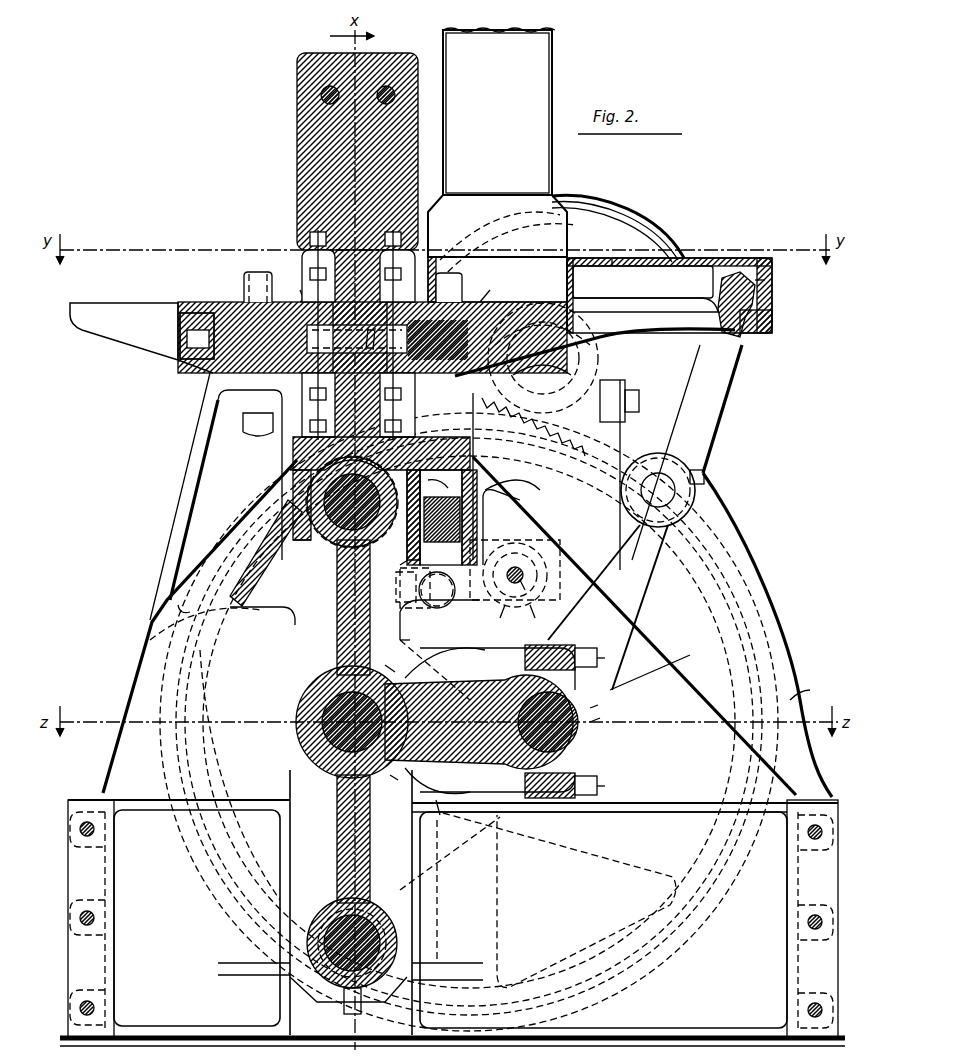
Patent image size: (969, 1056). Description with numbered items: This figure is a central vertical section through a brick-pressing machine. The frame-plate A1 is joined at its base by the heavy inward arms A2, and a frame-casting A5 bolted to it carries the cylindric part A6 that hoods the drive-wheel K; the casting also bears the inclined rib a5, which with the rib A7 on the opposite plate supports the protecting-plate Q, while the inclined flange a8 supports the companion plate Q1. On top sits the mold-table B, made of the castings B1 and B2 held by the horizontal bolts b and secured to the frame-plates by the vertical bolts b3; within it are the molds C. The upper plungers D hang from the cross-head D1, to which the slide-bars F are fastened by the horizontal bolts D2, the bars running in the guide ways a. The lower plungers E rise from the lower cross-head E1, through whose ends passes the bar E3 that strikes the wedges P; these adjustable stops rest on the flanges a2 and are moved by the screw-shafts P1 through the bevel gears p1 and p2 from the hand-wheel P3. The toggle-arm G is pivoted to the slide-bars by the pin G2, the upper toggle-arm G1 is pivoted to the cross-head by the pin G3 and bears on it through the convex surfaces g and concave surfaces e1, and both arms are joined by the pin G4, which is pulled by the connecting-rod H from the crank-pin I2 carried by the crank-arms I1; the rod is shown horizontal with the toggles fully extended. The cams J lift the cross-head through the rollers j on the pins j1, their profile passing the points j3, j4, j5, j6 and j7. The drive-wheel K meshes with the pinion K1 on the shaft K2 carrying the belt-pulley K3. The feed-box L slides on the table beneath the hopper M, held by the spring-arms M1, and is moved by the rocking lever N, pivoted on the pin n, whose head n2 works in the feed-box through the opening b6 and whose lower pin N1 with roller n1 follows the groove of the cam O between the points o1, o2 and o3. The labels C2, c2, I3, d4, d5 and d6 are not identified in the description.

The frame-plate A1 is at (452, 687).
The inwardly-extending arms A2 is at (450, 919).
The frame-casting A5 is at (728, 575).
The cylindric part A6 is at (810, 612).
The inclined rib A7 is at (512, 488).
The mold-table B is at (226, 300).
The mold-table casting B1 is at (208, 364).
The mold-table casting B2 is at (486, 287).
The horizontal bolts b is at (197, 336).
The vertical bolts b3 is at (258, 285).
The recess or opening b6 is at (666, 452).
The molds C is at (357, 339).
The bearing cap C2 is at (438, 340).
The pin c2 is at (291, 289).
The upper plungers D is at (340, 280).
The upper cross-head D1 is at (308, 150).
The horizontal bolts D2 is at (322, 95).
The lower plungers E is at (385, 530).
The lower cross-head E1 is at (292, 457).
The wrought-iron bar E3 is at (442, 509).
The concave bearing-surfaces e1 is at (355, 503).
The slide-bars F is at (312, 265).
The lower toggle-arm G is at (337, 832).
The upper toggle-arm G1 is at (337, 588).
The pivot-pin G2 is at (325, 915).
The pivot-pin G3 is at (349, 508).
The toggle pin G4 is at (330, 705).
The convex cylindric bearing-surfaces g is at (292, 473).
The connecting-rod H is at (316, 658).
The crank-arms I1 is at (497, 266).
The crank-pin I2 is at (594, 746).
The casting lug I3 is at (770, 275).
The cams J is at (499, 724).
The anti-friction rollers j is at (399, 631).
The bearing-pins j1 is at (427, 588).
The cam-surface point j3 is at (433, 819).
The cam-surface point j4 is at (384, 787).
The cam-surface point j5 is at (395, 728).
The cam-surface point j6 is at (603, 662).
The cam-surface point j7 is at (600, 775).
The drive-wheel K is at (735, 776).
The pinion K1 is at (546, 379).
The pinion shaft K2 is at (542, 366).
The belt-pulley K3 is at (655, 240).
The sliding feed-box L is at (698, 258).
The feed-hopper M is at (497, 226).
The spring-arms M1 is at (499, 111).
The rocking lever N is at (634, 593).
The pin N1 is at (600, 708).
The pivot-pin n is at (658, 490).
The anti-friction roller n1 is at (609, 716).
The elongated head n2 is at (735, 278).
The cam O is at (480, 830).
The cam-groove point o1 is at (435, 670).
The cam-groove point o2 is at (535, 800).
The cam-groove point o3 is at (335, 905).
The wedges P is at (515, 548).
The screw-shafts P1 is at (393, 563).
The hand-wheel P3 is at (527, 578).
The beveled gears p1 is at (505, 616).
The beveled gears p2 is at (539, 616).
The protecting-plate Q is at (700, 680).
The protecting-plate Q1 is at (225, 560).
The guide ways a is at (268, 932).
The horizontal flanges a2 is at (406, 587).
The inclined rib a5 is at (650, 678).
The inclined flange a8 is at (187, 608).
The lug d4 is at (704, 490).
The rod d5 is at (645, 613).
The rod d6 is at (594, 582).